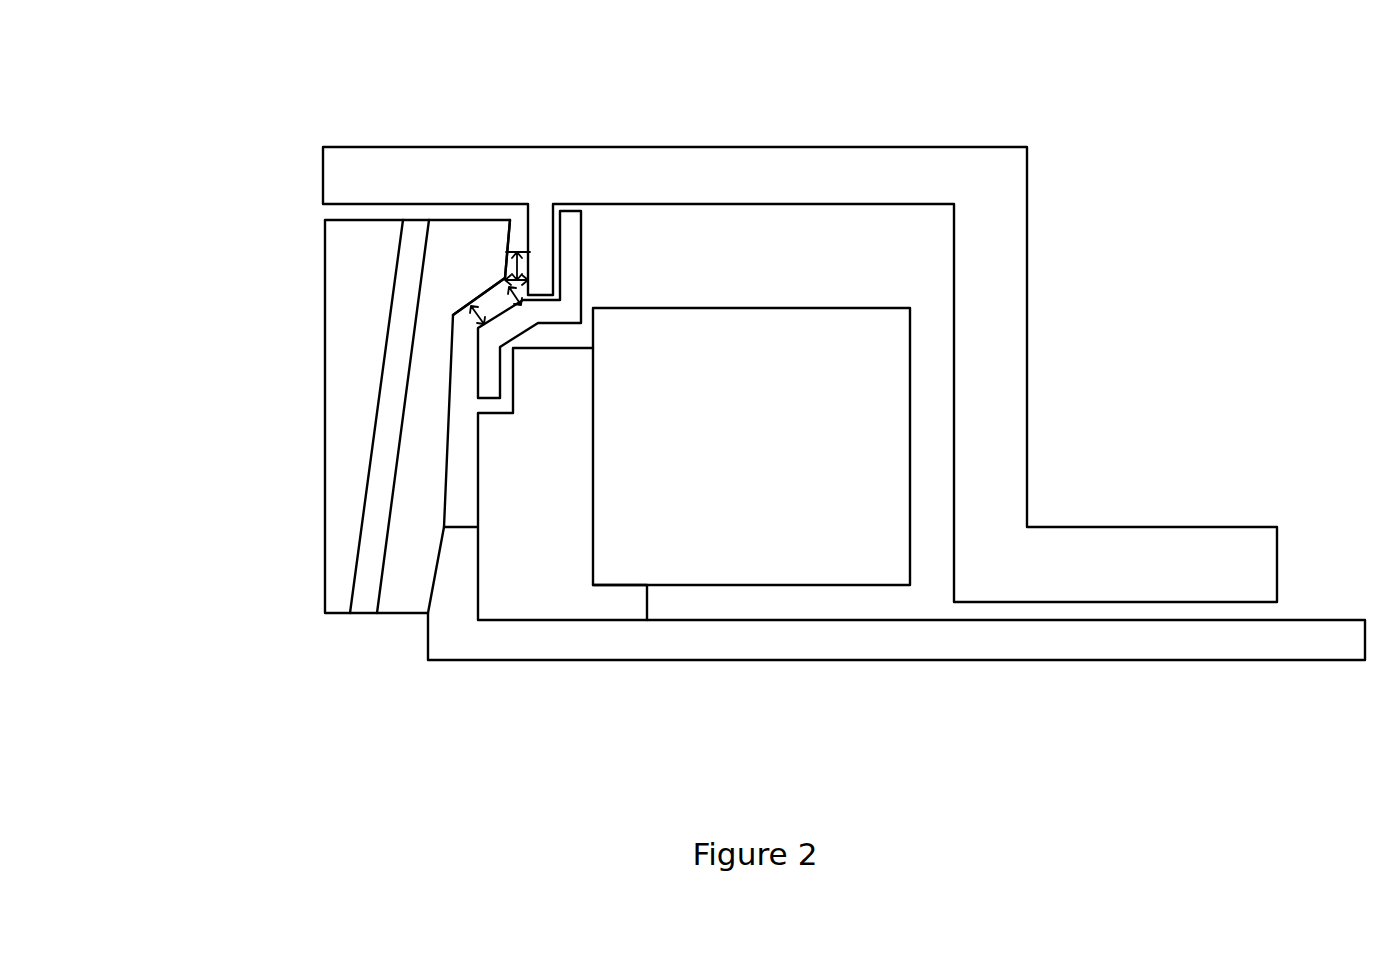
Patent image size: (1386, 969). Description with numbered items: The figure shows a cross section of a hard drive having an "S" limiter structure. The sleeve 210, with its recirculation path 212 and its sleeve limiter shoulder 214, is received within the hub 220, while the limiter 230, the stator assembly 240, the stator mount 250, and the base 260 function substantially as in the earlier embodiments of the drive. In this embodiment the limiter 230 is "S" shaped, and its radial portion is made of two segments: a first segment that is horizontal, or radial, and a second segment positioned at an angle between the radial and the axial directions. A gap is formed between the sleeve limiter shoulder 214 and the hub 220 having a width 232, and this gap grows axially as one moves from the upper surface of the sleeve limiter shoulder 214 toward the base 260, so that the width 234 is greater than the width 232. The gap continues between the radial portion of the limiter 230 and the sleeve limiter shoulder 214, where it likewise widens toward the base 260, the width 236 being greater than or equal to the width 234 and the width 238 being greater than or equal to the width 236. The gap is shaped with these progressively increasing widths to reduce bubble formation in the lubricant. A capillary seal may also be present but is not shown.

The sleeve 210 is at (325, 502).
The recirculation path 212 is at (368, 587).
The sleeve limiter shoulder 214 is at (487, 247).
The hub 220 is at (1013, 294).
The limiter 230 is at (567, 262).
The width 232 is at (517, 245).
The width 234 is at (503, 270).
The width 236 is at (513, 287).
The width 238 is at (475, 308).
The stator assembly 240 is at (733, 473).
The stator mount 250 is at (520, 513).
The base 260 is at (1051, 633).